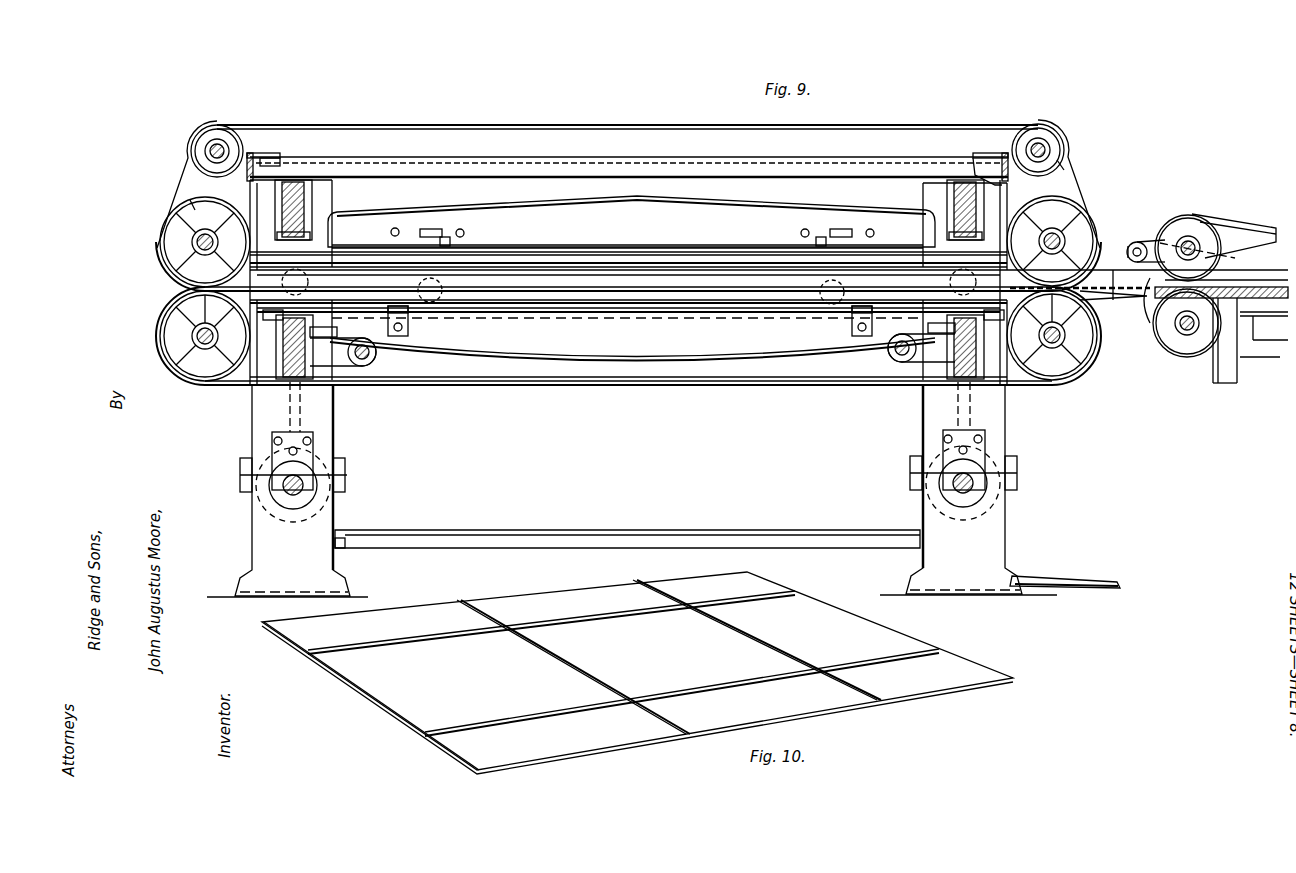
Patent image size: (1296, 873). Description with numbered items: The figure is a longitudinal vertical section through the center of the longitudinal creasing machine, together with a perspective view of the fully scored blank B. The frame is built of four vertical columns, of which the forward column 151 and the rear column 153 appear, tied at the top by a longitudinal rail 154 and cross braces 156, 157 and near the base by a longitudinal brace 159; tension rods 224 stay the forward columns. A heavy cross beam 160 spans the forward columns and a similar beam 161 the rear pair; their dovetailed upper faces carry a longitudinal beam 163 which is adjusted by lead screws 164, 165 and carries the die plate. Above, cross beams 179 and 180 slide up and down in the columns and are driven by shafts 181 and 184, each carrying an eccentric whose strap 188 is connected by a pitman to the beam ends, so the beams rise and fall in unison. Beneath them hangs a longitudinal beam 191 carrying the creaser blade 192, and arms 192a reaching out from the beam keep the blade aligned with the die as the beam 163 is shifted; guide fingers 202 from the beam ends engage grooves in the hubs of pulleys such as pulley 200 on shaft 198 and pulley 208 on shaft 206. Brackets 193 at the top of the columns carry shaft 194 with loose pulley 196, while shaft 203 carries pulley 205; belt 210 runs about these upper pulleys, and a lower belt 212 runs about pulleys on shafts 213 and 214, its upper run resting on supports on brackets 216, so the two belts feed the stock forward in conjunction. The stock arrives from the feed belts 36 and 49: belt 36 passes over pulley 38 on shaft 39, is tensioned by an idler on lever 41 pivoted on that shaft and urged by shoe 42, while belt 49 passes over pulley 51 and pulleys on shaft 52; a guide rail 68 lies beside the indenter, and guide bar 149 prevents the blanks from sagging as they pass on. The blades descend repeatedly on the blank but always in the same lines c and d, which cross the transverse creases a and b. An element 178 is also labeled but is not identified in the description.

In FIG. 9, the belt 210 is at (428, 129).
In FIG. 9, the shaft 203 is at (220, 140).
In FIG. 9, the pulley 196 is at (1041, 130).
In FIG. 9, the shaft 194 is at (1048, 160).
In FIG. 9, the pulley 208 is at (192, 205).
In FIG. 9, the pulley 205 is at (240, 165).
In FIG. 9, the shaft 206 is at (196, 242).
In FIG. 9, the pulley 200 is at (1048, 198).
In FIG. 9, the shaft 214 is at (200, 347).
In FIG. 9, the shaft 213 is at (1047, 348).
In FIG. 9, the guide fingers 202 is at (228, 216).
In FIG. 9, the endless belt 212 is at (660, 385).
In FIG. 9, the longitudinal rail 154 is at (629, 167).
In FIG. 9, the cross brace 157 is at (283, 163).
In FIG. 9, the brackets 193 is at (260, 152).
In FIG. 9, the cross brace 156 is at (980, 160).
In FIG. 9, the longitudinal beam 191 is at (631, 221).
In FIG. 9, the arms 192a is at (632, 230).
In FIG. 9, the creaser blade 192 is at (592, 262).
In FIG. 9, the upper belt support 178 is at (628, 282).
In FIG. 9, the cross beam 180 is at (306, 199).
In FIG. 9, the cross beam 179 is at (953, 199).
In FIG. 9, the cross beam 161 is at (292, 382).
In FIG. 9, the cross beam 160 is at (952, 372).
In FIG. 9, the longitudinal beam 163 is at (632, 345).
In FIG. 9, the guide bar 149 is at (593, 300).
In FIG. 9, the brackets 216 is at (409, 322).
In FIG. 9, the lead screw 165 is at (372, 357).
In FIG. 9, the lead screw 164 is at (895, 358).
In FIG. 9, the vertical column 153 is at (323, 408).
In FIG. 9, the vertical column 151 is at (963, 385).
In FIG. 9, the tension rods 224 is at (1068, 578).
In FIG. 9, the eccentric strap 188 is at (346, 484).
In FIG. 9, the shaft 184 is at (291, 496).
In FIG. 9, the shaft 181 is at (966, 495).
In FIG. 9, the longitudinal brace 159 is at (627, 527).
In FIG. 9, the sheet of material B is at (927, 285).
In FIG. 10, the sheet of material B is at (637, 673).
In FIG. 9, the belt 36 is at (1208, 220).
In FIG. 9, the pulley 38 is at (1188, 241).
In FIG. 9, the shoe 42 is at (1143, 241).
In FIG. 9, the shaft 198 is at (1138, 241).
In FIG. 9, the lever 41 is at (1233, 238).
In FIG. 9, the shaft 39 is at (1209, 256).
In FIG. 9, the pulley 51 is at (1170, 340).
In FIG. 9, the shaft 52 is at (1185, 332).
In FIG. 9, the guide rail 68 is at (1140, 305).
In FIG. 9, the belt 49 is at (1247, 358).
In FIG. 10, the crease line c is at (430, 640).
In FIG. 10, the crease line d is at (570, 708).
In FIG. 10, the transverse crease a is at (604, 676).
In FIG. 10, the transverse crease b is at (748, 640).